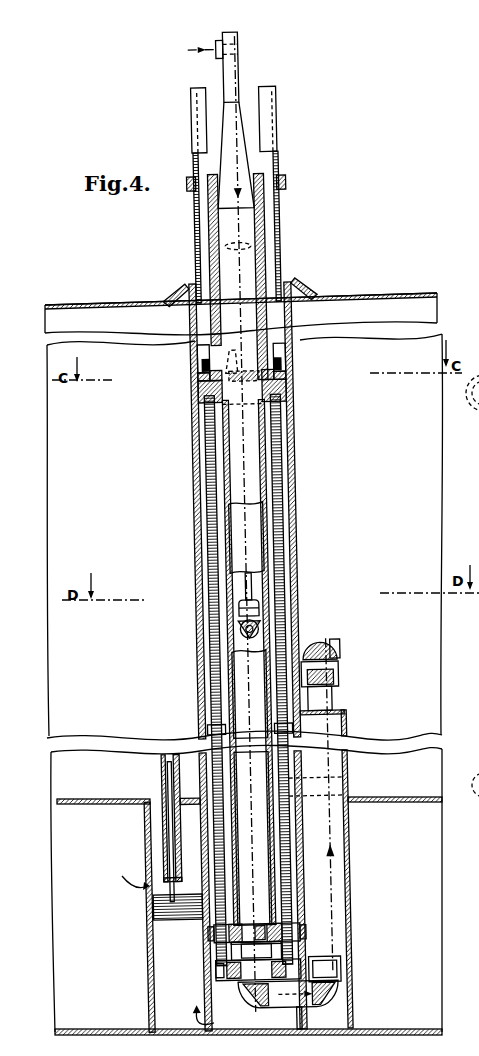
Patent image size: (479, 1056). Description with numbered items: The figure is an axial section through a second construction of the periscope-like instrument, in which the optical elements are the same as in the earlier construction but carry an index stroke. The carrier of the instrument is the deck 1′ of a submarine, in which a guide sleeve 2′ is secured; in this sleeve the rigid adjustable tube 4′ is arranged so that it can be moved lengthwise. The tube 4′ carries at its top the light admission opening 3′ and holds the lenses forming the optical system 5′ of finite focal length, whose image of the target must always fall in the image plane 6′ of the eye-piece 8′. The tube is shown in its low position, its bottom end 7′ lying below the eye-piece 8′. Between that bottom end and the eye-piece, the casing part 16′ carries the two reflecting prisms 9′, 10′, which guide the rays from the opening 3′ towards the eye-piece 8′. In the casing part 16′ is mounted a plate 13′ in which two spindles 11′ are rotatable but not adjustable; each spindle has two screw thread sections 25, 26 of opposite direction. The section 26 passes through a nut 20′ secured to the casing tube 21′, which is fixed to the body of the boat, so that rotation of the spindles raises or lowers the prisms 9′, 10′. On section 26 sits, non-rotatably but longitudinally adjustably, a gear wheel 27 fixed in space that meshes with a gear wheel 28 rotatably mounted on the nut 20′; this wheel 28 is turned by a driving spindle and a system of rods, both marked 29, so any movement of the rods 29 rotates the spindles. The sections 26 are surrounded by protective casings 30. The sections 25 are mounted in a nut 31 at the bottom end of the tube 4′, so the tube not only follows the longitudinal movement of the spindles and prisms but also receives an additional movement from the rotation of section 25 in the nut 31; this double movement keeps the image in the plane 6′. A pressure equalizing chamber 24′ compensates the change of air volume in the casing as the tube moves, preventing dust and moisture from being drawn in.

The deck 1′ is at (365, 296).
The guide sleeve 2′ is at (265, 197).
The light admission opening 3′ is at (224, 51).
The rigid adjustable tube 4′ is at (230, 219).
The optical system 5′ is at (243, 246).
The image plane 6′ is at (333, 670).
The bottom end of the tube 7′ is at (280, 945).
The eye-piece 8′ is at (338, 652).
The reflecting prism 9′ is at (245, 985).
The reflecting prism 10′ is at (333, 985).
The spindle 11′ is at (288, 957).
The plate 13′ is at (213, 972).
The casing part 16′ is at (240, 983).
The nut 20′ is at (295, 393).
The casing tube 21′ is at (297, 447).
The pressure equalizing chamber 24′ is at (478, 418).
The screw thread section 25 is at (218, 752).
The screw thread section 26 is at (212, 490).
The gear wheel 27 is at (205, 378).
The gear wheel 28 is at (200, 352).
The driving spindle and rods 29 is at (297, 353).
The protective casing 30 is at (267, 133).
The nut 31 is at (200, 937).